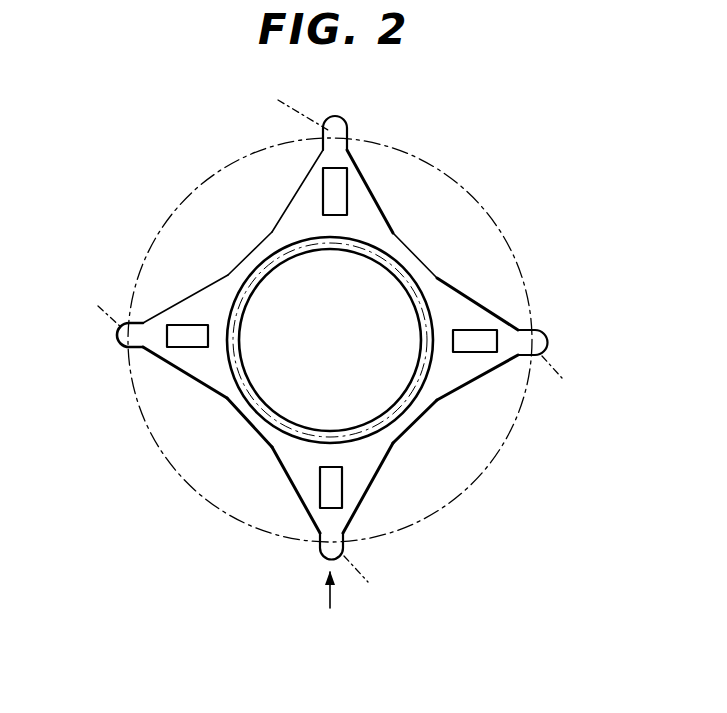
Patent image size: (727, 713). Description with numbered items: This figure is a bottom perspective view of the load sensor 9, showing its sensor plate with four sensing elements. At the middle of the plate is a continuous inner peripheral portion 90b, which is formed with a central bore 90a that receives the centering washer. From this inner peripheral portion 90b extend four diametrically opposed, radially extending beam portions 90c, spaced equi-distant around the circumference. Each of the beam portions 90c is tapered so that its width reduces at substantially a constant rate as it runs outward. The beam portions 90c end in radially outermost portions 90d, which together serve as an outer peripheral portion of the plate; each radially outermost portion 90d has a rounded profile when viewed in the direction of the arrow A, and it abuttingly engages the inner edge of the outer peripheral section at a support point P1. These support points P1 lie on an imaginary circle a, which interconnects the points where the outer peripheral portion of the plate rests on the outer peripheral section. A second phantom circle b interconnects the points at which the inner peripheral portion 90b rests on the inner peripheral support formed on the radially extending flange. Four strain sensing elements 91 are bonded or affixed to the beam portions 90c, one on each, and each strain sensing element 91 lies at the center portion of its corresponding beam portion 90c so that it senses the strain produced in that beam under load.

The load sensor 9 is at (433, 212).
The central bore 90a is at (242, 402).
The inner peripheral portion 90b is at (425, 264).
The beam portions 90c is at (308, 196).
The radially outermost portions 90d is at (342, 124).
The strain sensing elements 91 is at (341, 191).
The support point P1 is at (329, 341).
The imaginary circle a is at (507, 447).
The phantom circle b is at (242, 284).
The arrow A is at (326, 606).